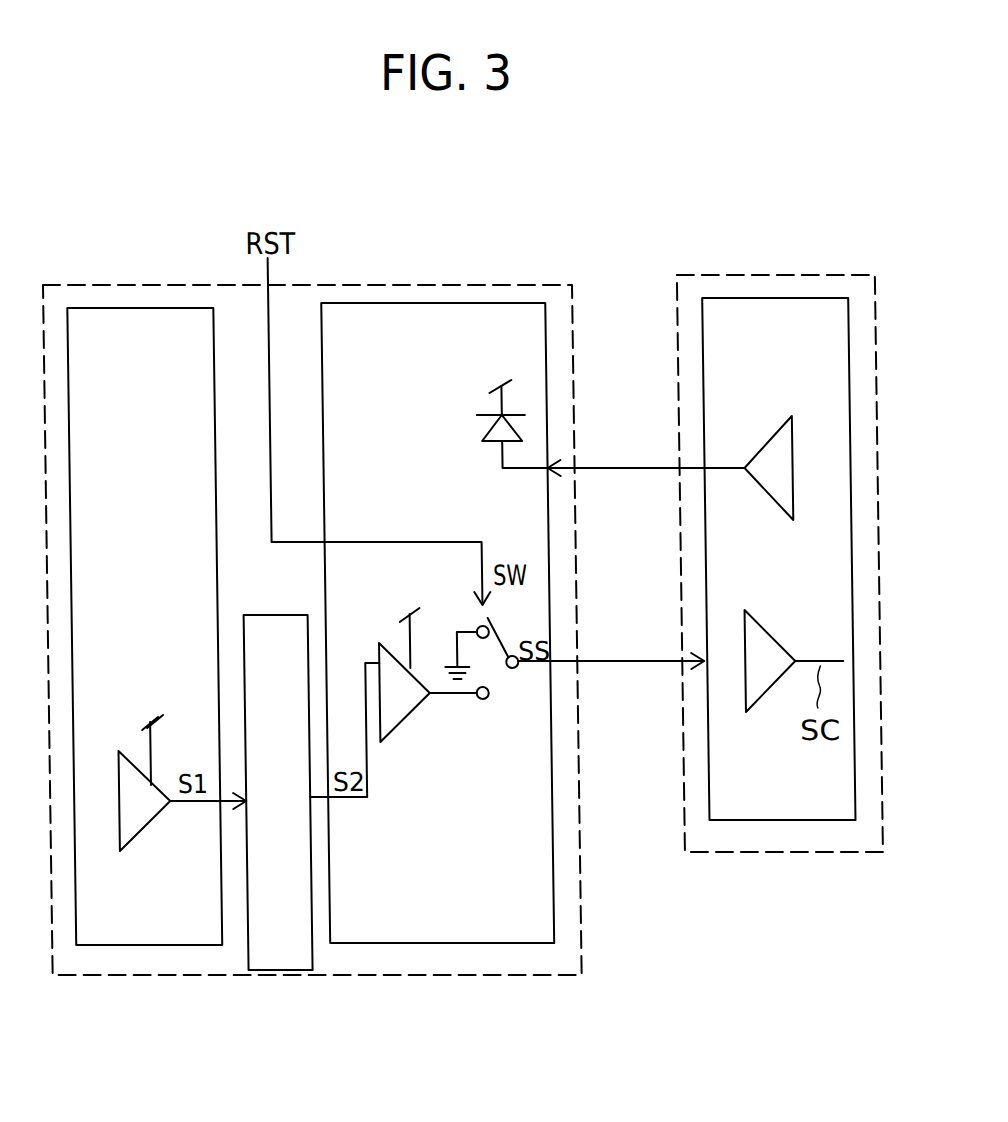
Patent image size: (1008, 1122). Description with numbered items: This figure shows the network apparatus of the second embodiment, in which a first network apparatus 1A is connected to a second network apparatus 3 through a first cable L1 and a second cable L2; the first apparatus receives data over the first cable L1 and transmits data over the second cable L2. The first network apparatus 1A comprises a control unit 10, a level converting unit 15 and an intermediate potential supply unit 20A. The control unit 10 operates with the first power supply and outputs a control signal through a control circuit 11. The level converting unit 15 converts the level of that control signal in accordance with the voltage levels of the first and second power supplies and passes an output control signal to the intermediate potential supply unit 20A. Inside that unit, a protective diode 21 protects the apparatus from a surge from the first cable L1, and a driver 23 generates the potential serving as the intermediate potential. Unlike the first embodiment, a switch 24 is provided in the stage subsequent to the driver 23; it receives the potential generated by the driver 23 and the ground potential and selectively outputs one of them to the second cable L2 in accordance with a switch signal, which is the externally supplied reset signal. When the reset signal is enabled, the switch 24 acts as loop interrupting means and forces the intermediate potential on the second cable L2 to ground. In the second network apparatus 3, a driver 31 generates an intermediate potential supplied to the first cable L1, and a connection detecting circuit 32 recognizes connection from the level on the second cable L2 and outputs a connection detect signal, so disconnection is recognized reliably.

The first network apparatus 1A is at (361, 283).
The control unit 10 is at (139, 308).
The intermediate potential supply unit 20A is at (447, 303).
The level converting unit 15 is at (272, 615).
The control circuit 11 is at (142, 822).
The driver 23 is at (402, 716).
The switch 24 is at (500, 703).
The protective diode 21 is at (487, 432).
The second network apparatus 3 is at (766, 274).
The driver 31 is at (766, 441).
The connection detecting circuit 32 is at (771, 641).
The first cable L1 is at (628, 466).
The second cable L2 is at (628, 667).